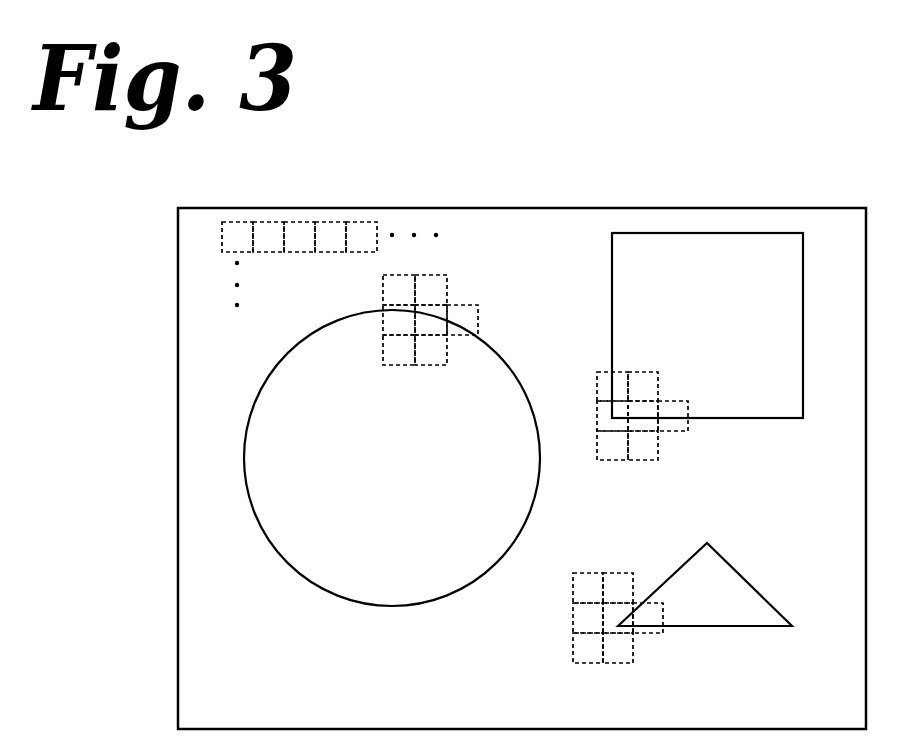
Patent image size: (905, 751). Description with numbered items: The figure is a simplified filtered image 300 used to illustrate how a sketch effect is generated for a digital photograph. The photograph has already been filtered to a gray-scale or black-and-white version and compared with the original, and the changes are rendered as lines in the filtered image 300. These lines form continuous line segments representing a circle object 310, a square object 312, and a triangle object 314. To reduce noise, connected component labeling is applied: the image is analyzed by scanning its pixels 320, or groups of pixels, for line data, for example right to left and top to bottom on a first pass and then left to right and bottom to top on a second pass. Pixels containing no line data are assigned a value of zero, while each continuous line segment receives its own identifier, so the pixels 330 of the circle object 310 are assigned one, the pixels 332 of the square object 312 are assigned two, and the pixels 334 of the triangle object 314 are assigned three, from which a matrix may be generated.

The filtered image 300 is at (178, 470).
The circle object 310 is at (495, 353).
The square object 312 is at (770, 418).
The triangle object 314 is at (753, 587).
The pixels 320 is at (293, 257).
The pixels 330 is at (401, 368).
The pixels 332 is at (611, 465).
The pixels 334 is at (589, 670).